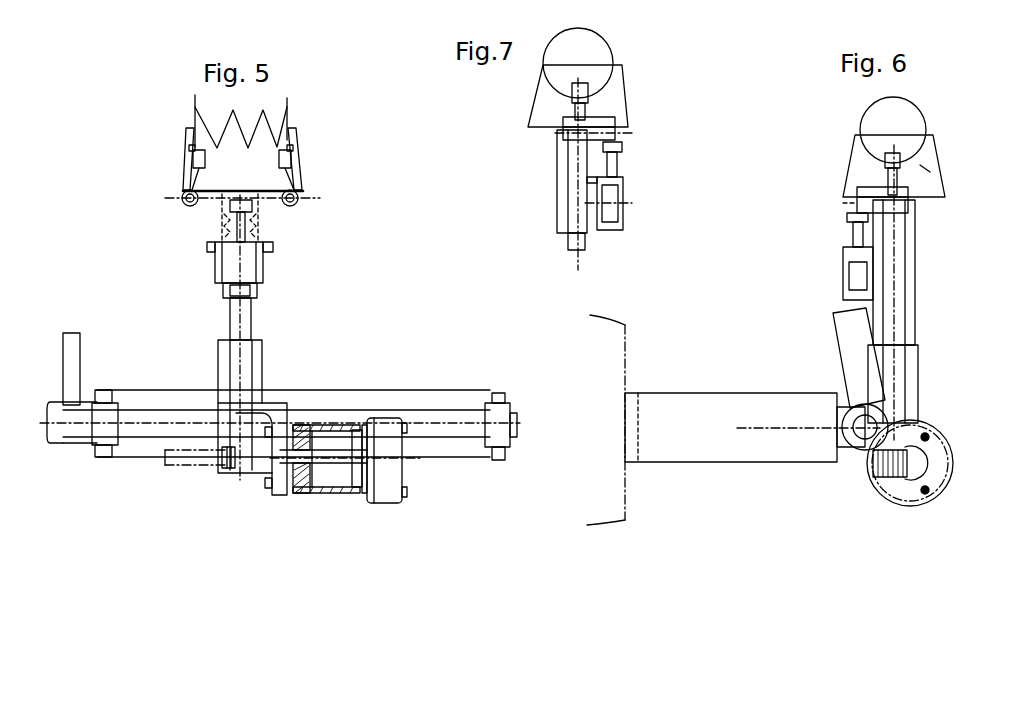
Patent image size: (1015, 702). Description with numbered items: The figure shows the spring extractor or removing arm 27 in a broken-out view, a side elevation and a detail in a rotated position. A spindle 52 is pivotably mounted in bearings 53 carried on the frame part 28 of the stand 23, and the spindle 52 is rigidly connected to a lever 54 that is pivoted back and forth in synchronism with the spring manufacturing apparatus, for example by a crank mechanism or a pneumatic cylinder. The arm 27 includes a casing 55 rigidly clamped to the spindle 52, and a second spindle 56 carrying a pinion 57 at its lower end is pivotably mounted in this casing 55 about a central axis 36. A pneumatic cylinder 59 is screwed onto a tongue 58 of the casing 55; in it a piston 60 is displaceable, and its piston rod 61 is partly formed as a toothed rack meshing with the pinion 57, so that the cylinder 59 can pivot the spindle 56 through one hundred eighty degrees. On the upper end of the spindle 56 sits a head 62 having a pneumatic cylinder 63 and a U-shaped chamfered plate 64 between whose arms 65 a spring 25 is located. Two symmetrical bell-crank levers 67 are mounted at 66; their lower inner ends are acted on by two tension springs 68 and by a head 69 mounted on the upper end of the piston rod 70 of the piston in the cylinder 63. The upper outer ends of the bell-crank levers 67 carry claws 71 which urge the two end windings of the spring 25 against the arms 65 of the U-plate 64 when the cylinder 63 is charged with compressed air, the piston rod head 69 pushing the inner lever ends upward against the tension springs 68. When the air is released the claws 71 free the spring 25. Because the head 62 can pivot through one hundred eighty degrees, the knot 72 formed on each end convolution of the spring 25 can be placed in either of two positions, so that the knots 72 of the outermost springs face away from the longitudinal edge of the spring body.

In FIG. 6, the frame 23 is at (623, 352).
In FIG. 5, the spring 25 is at (263, 110).
In FIG. 6, the spring 25 is at (867, 112).
In FIG. 7, the spring 25 is at (600, 50).
In FIG. 5, the arm 27 is at (274, 259).
In FIG. 6, the arm 27 is at (800, 231).
In FIG. 5, the frame part 28 is at (393, 400).
In FIG. 6, the frame part 28 is at (680, 407).
In FIG. 5, the center axis bolt 36 is at (233, 261).
In FIG. 5, the spindle 52 is at (433, 420).
In FIG. 6, the spindle 52 is at (863, 438).
In FIG. 5, the bearings 53 is at (108, 411).
In FIG. 5, the lever 54 is at (72, 361).
In FIG. 6, the lever 54 is at (840, 343).
In FIG. 5, the casing 55 is at (265, 366).
In FIG. 6, the casing 55 is at (913, 386).
In FIG. 5, the spindle 56 is at (248, 328).
In FIG. 6, the spindle 56 is at (898, 323).
In FIG. 7, the spindle 56 is at (587, 242).
In FIG. 5, the pinion 57 is at (215, 474).
In FIG. 6, the pinion 57 is at (885, 478).
In FIG. 5, the tongue 58 is at (280, 488).
In FIG. 6, the tongue 58 is at (940, 476).
In FIG. 5, the pneumatic cylinder 59 is at (337, 493).
In FIG. 5, the piston 60 is at (385, 498).
In FIG. 5, the piston rod 61 is at (180, 470).
In FIG. 6, the piston rod 61 is at (932, 463).
In FIG. 5, the head 62 is at (267, 274).
In FIG. 6, the head 62 is at (922, 269).
In FIG. 7, the head 62 is at (629, 174).
In FIG. 6, the pneumatic cylinder 63 is at (850, 291).
In FIG. 5, the U-shape chamfered plate 64 is at (241, 135).
In FIG. 6, the U-shape chamfered plate 64 is at (946, 204).
In FIG. 5, the arms 65 is at (190, 137).
In FIG. 6, the arms 65 is at (933, 158).
In FIG. 5, the mounting 66 is at (185, 202).
In FIG. 5, the bell-crank levers 67 is at (190, 175).
In FIG. 5, the tension springs 68 is at (217, 217).
In FIG. 5, the head 69 is at (210, 207).
In FIG. 5, the piston rod 70 is at (208, 248).
In FIG. 6, the piston rod 70 is at (850, 228).
In FIG. 5, the claws 71 is at (195, 158).
In FIG. 6, the claws 71 is at (955, 176).
In FIG. 6, the knot 72 is at (927, 126).
In FIG. 7, the knot 72 is at (547, 63).